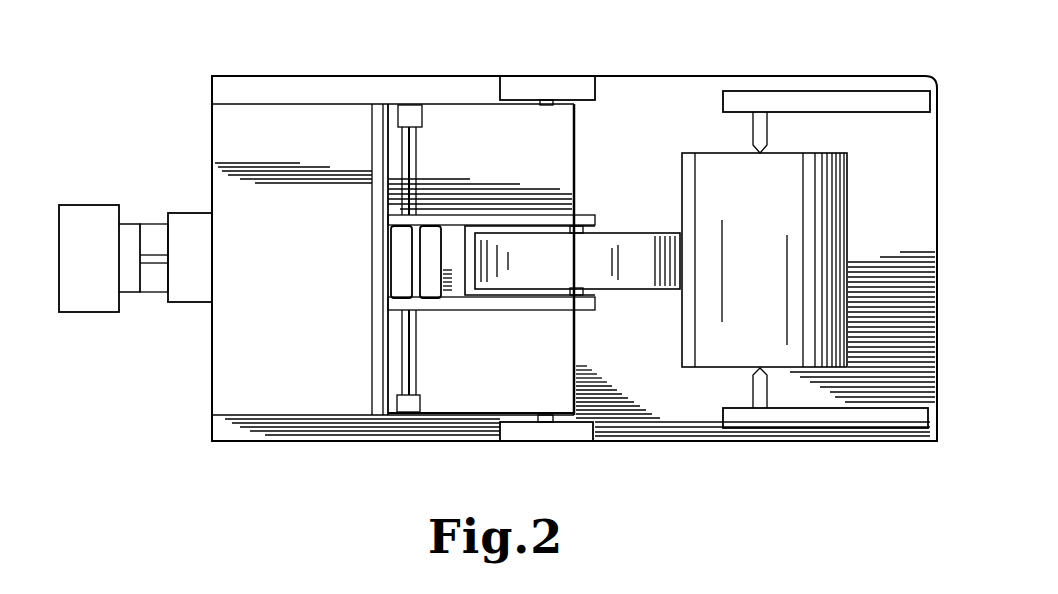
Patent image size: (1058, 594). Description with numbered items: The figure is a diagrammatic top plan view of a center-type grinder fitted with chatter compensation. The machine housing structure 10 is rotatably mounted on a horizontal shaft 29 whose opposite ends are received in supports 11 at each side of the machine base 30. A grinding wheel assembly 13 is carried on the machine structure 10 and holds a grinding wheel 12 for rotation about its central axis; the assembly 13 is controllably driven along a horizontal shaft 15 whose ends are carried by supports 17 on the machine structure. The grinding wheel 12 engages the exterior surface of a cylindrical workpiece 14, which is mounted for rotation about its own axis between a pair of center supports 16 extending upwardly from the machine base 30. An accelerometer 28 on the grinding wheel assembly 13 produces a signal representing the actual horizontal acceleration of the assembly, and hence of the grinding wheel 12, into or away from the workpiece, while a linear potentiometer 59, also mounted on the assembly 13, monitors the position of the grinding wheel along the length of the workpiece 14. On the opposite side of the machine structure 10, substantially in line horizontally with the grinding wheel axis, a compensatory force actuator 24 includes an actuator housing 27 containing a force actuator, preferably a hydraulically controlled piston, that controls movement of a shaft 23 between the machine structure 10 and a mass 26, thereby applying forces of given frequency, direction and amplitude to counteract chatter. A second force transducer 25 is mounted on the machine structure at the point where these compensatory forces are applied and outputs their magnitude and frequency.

The machine housing structure 10 is at (330, 133).
The supports 11 is at (520, 85).
The grinding wheel 12 is at (628, 234).
The grinding wheel assembly 13 is at (540, 318).
The cylindrical workpiece 14 is at (825, 233).
The horizontal shaft 15 is at (415, 350).
The center supports 16 is at (833, 105).
The supports 17 is at (415, 404).
The shaft 23 is at (148, 255).
The compensatory force actuator 24 is at (185, 303).
The second force transducer 25 is at (188, 228).
The mass 26 is at (88, 222).
The actuator housing 27 is at (128, 285).
The accelerometer 28 is at (440, 243).
The horizontal shaft 29 is at (545, 106).
The machine base 30 is at (653, 97).
The linear potentiometer 59 is at (395, 292).